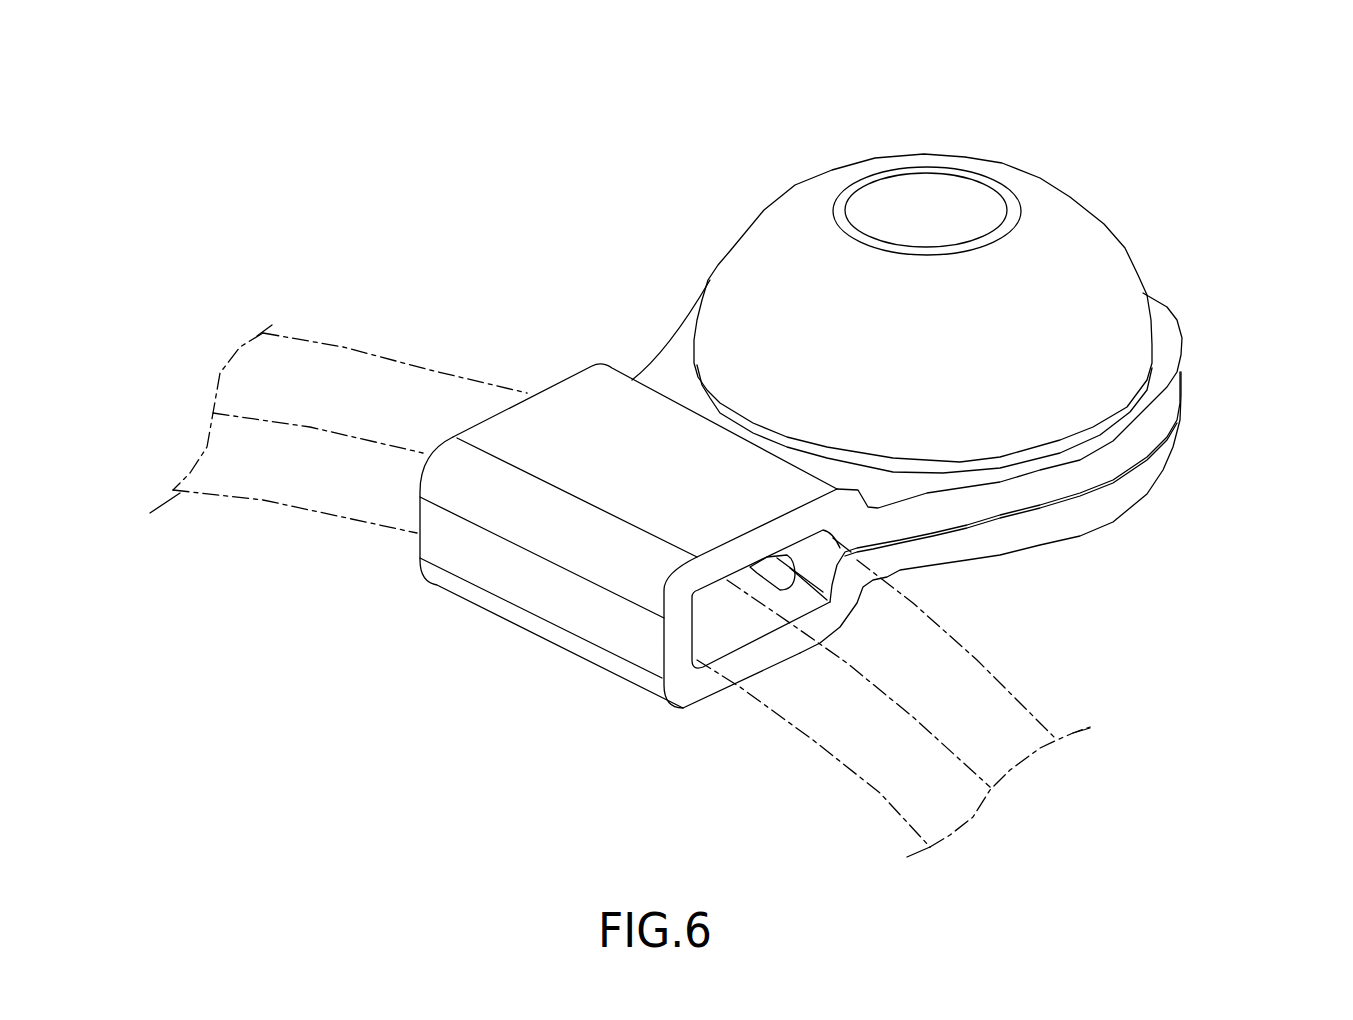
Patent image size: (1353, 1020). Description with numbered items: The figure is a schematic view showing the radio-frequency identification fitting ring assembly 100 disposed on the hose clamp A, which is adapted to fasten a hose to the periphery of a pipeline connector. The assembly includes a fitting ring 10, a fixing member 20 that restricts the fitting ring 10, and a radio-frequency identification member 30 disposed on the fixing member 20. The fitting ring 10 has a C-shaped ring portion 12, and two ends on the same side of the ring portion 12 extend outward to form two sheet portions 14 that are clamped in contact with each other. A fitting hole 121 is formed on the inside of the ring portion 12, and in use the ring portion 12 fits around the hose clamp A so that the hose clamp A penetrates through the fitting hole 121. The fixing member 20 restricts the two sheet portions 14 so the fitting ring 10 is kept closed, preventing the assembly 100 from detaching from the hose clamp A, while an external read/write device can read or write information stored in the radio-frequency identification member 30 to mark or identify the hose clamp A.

The radio-frequency identification fitting ring assembly 100 is at (726, 142).
The fitting ring 10 is at (660, 304).
The ring portion 12 is at (527, 582).
The fitting hole 121 is at (646, 438).
The sheet portions 14 is at (1125, 453).
The fixing member 20 is at (1100, 215).
The radio-frequency identification member 30 is at (935, 212).
The hose clamp A is at (330, 340).